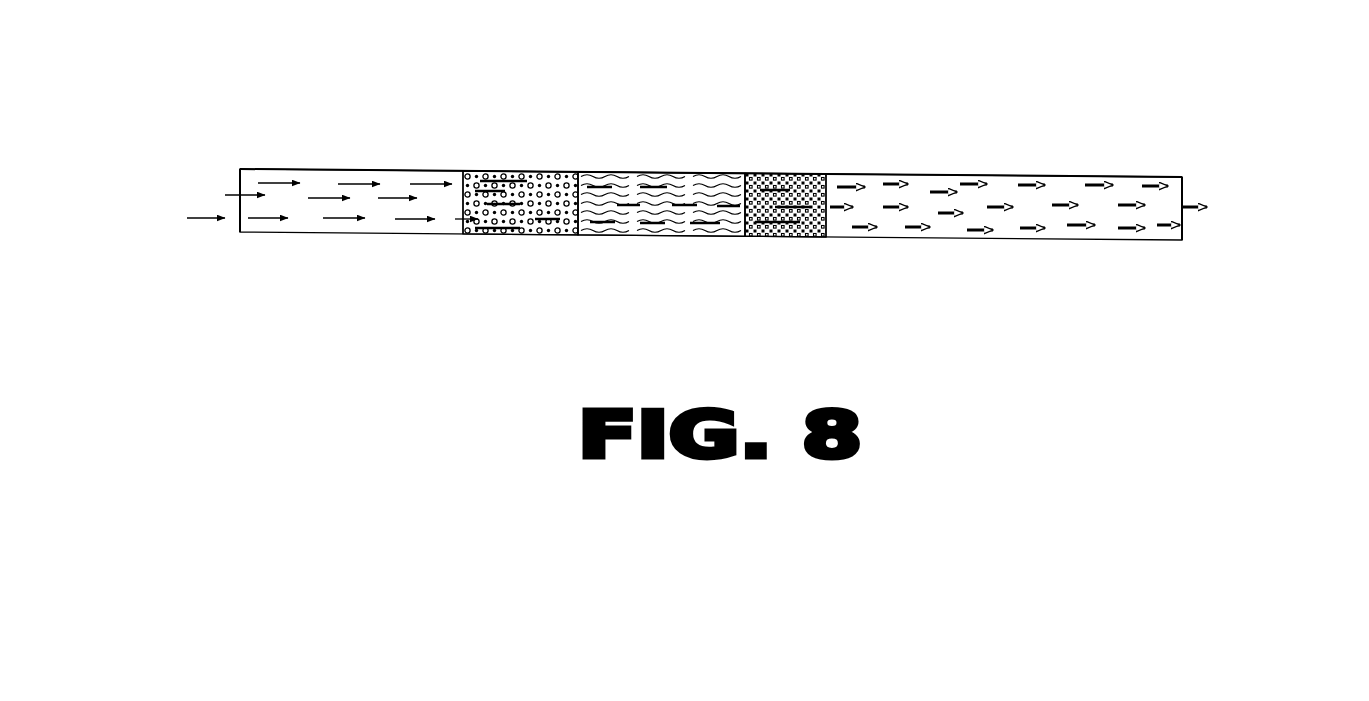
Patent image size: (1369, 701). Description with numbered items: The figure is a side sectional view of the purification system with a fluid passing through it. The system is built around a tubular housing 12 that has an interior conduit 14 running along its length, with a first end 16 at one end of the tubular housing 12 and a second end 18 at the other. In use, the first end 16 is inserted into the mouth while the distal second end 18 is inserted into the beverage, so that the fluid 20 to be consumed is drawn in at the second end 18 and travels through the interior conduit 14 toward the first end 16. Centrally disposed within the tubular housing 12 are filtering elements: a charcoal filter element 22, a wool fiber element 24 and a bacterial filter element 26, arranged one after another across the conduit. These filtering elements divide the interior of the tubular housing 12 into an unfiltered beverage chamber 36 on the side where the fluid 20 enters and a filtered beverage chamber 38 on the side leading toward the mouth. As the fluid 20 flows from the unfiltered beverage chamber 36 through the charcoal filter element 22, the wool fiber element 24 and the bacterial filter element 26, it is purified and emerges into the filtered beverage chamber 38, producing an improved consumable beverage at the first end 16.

The tubular housing 12 is at (1007, 240).
The interior conduit 14 is at (242, 200).
The first end of tubular housing 16 is at (1172, 173).
The second end of tubular housing 18 is at (262, 165).
The fluid 20 is at (232, 183).
The charcoal filter element 22 is at (507, 173).
The wool fiber element 24 is at (688, 222).
The bacterial filter element 26 is at (785, 173).
The unfiltered beverage chamber 36 is at (402, 188).
The filtered beverage chamber 38 is at (1015, 198).